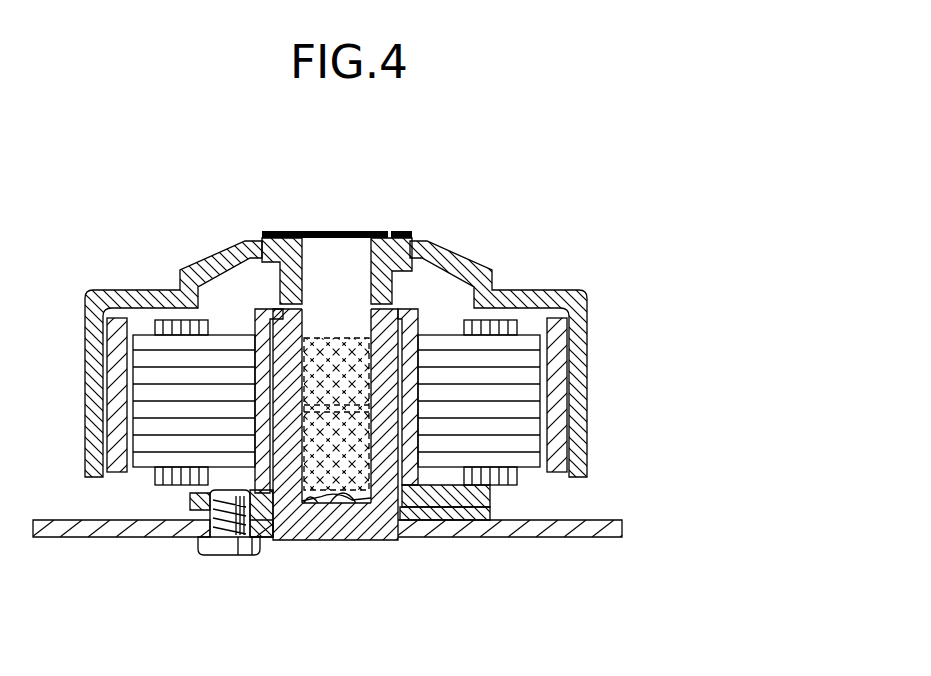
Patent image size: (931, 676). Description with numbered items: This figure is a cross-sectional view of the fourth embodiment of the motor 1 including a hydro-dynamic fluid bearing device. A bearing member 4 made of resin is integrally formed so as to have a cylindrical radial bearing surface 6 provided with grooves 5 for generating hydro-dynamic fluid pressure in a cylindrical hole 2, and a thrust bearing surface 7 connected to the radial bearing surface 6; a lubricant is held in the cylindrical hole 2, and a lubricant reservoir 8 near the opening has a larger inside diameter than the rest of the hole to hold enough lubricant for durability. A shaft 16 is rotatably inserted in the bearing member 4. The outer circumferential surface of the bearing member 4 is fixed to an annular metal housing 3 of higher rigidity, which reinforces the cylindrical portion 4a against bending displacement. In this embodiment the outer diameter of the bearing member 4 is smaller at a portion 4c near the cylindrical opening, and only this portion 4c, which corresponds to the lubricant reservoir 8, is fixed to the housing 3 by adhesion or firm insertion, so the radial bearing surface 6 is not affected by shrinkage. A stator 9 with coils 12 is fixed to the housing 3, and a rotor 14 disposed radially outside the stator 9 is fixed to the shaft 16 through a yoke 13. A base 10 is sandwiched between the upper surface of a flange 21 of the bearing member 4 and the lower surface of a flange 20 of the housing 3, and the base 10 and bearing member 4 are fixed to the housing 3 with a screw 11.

The motor 1 is at (601, 205).
The cylindrical hole 2 is at (312, 506).
The metal housing 3 is at (442, 326).
The bearing member 4 is at (417, 256).
The cylindrical portion 4a is at (388, 462).
The portion near cylindrical opening 4c is at (237, 261).
The grooves 5 is at (352, 338).
The radial bearing surface 6 is at (373, 468).
The thrust bearing surface 7 is at (347, 505).
The lubricant reservoir 8 is at (301, 315).
The stator 9 is at (447, 322).
The base 10 is at (560, 528).
The screw 11 is at (205, 549).
The coils 12 is at (162, 320).
The yoke 13 is at (586, 307).
The rotor 14 is at (566, 391).
The shaft 16 is at (313, 250).
The flange of the housing 20 is at (482, 498).
The flange 21 is at (458, 515).